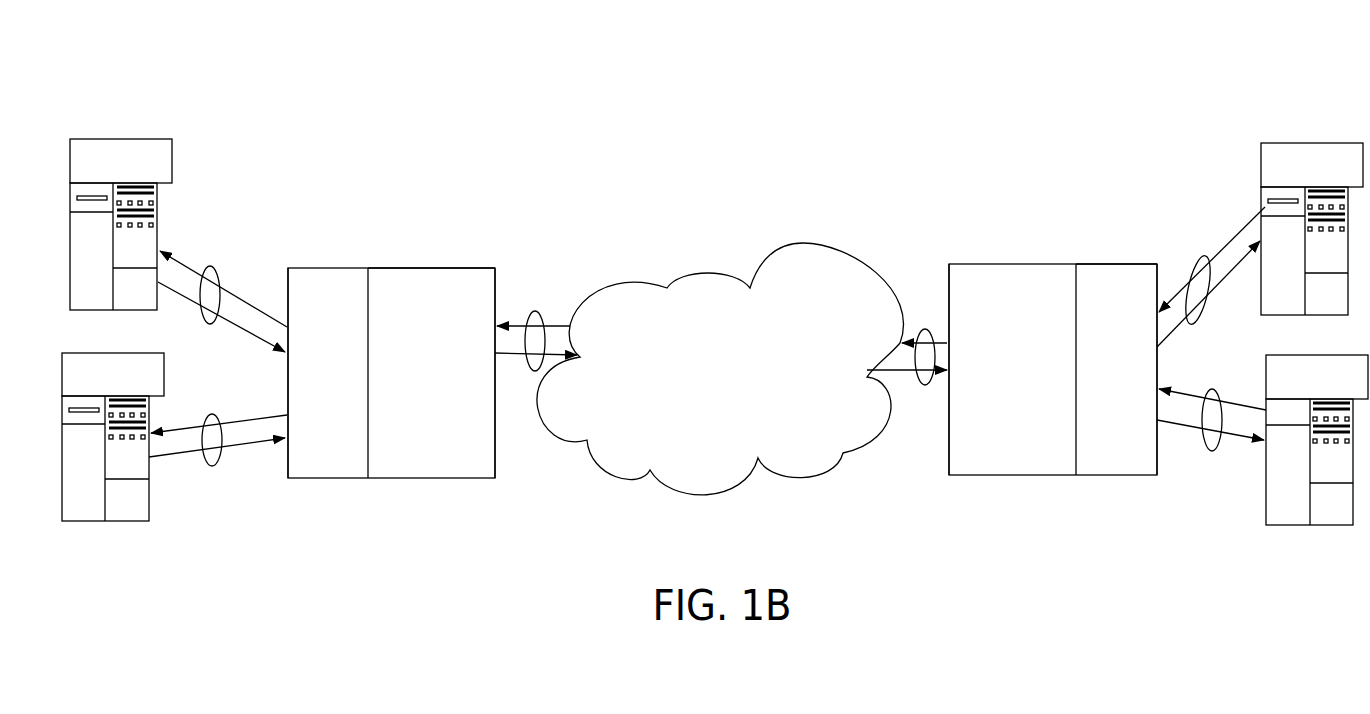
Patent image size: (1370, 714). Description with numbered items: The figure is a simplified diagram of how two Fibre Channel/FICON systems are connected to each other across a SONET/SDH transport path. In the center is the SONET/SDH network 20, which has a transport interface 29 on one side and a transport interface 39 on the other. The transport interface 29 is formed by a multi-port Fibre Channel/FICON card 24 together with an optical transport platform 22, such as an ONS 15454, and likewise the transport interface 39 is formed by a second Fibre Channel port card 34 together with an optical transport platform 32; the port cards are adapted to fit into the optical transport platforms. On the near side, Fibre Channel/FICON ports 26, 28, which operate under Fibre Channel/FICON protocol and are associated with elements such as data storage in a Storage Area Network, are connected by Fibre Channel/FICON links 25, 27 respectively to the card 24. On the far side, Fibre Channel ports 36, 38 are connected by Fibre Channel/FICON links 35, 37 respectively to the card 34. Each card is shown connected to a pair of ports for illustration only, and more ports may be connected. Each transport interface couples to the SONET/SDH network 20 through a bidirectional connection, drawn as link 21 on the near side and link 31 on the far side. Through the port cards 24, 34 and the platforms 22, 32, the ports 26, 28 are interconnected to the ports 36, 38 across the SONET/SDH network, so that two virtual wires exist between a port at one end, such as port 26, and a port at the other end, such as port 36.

The SONET/SDH network 20 is at (720, 270).
The bidirectional optical link 21 is at (539, 312).
The optical transport platform 22 is at (434, 268).
The multi-port Fibre Channel/FICON card 24 is at (330, 268).
The Fibre Channel/FICON link 25 is at (236, 448).
The Fibre Channel/FICON port 26 is at (175, 502).
The Fibre Channel/FICON link 27 is at (220, 275).
The Fibre Channel/FICON port 28 is at (185, 140).
The transport interface 29 is at (391, 292).
The bidirectional optical link 31 is at (933, 395).
The optical transport platform 32 is at (1012, 265).
The Fibre Channel port card 34 is at (1116, 265).
The Fibre Channel/FICON link 35 is at (1212, 447).
The Fibre Channel port 36 is at (1243, 492).
The Fibre Channel/FICON link 37 is at (1197, 256).
The Fibre Channel port 38 is at (1272, 127).
The transport interface 39 is at (1055, 292).